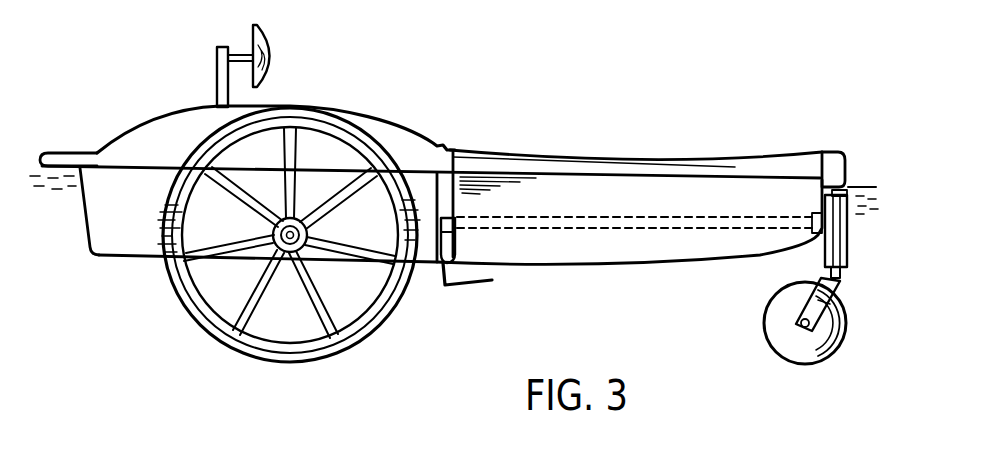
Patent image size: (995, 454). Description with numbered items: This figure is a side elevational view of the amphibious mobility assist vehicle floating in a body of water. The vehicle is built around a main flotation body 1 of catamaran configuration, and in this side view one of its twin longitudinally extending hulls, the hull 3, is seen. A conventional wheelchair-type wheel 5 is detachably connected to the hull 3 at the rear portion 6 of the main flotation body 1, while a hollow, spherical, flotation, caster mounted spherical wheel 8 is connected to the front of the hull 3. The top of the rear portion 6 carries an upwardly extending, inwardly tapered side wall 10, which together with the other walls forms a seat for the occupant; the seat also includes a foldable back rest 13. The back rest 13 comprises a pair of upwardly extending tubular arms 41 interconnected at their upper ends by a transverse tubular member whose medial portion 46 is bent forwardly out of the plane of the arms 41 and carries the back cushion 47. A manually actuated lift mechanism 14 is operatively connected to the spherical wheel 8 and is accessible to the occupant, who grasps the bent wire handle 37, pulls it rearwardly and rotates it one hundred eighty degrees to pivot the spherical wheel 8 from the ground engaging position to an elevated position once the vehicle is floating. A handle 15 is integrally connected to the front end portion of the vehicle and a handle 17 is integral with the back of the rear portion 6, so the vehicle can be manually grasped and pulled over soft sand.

The main flotation body 1 is at (454, 201).
The hull 3 is at (617, 252).
The wheelchair-type wheel 5 is at (183, 278).
The rear portion 6 is at (110, 248).
The spherical wheel 8 is at (816, 351).
The side wall 10 is at (388, 127).
The foldable back rest 13 is at (249, 53).
The lift mechanism 14 is at (453, 303).
The handle 15 is at (843, 175).
The handle 17 is at (67, 131).
The bent wire handle 37 is at (442, 266).
The tubular arm 41 is at (217, 68).
The medial portion 46 is at (237, 52).
The back cushion 47 is at (273, 56).